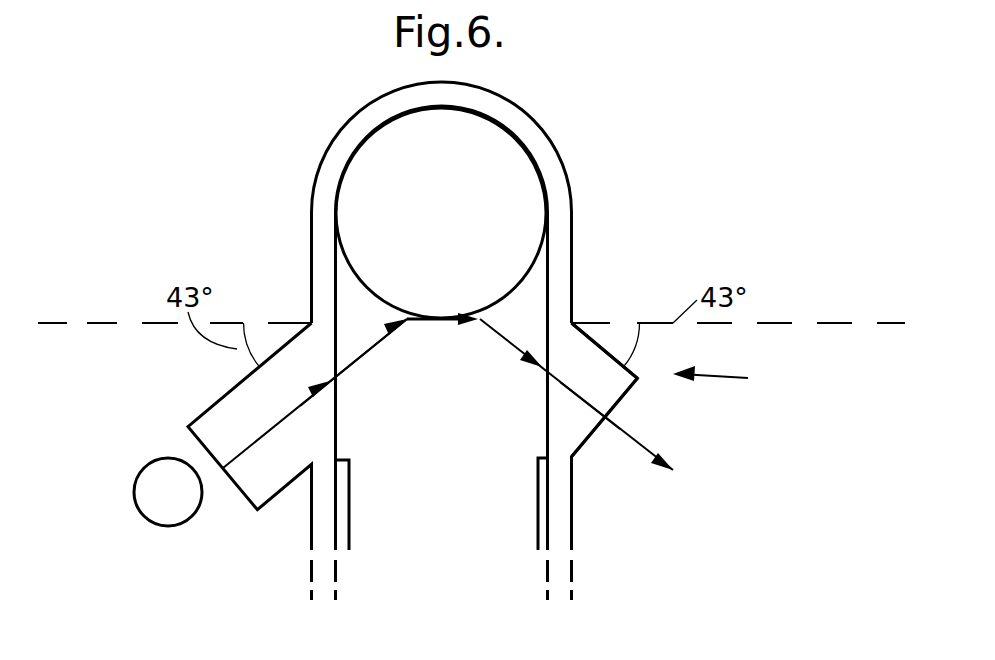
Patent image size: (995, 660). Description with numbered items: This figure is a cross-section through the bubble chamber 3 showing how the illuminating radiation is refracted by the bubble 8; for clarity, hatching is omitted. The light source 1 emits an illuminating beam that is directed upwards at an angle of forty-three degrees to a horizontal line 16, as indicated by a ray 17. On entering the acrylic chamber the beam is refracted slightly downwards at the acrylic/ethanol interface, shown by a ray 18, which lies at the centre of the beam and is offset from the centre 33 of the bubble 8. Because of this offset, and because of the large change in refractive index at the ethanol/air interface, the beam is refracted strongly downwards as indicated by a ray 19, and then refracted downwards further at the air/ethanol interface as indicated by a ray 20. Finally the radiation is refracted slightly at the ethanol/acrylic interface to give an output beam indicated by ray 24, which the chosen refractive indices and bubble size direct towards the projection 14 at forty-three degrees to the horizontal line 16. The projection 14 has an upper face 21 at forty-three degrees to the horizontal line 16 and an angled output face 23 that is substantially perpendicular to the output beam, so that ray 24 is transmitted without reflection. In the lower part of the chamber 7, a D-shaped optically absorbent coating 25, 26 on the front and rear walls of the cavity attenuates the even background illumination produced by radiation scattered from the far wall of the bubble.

The light source 1 is at (146, 516).
The bubble chamber 3 is at (356, 95).
The housing stem 7 is at (456, 548).
The bubble 8 is at (390, 228).
The projection 14 is at (731, 386).
The horizontal line 16 is at (60, 326).
The ray 17 is at (261, 437).
The ray 18 is at (367, 351).
The ray 19 is at (443, 317).
The ray 20 is at (512, 346).
The upper face 21 is at (594, 340).
The angled output face 23 is at (594, 441).
The ray 24 is at (573, 393).
The optically absorbent coating 25 is at (350, 500).
The optically absorbent coating 26 is at (537, 503).
The centre of the bubble 33 is at (444, 213).